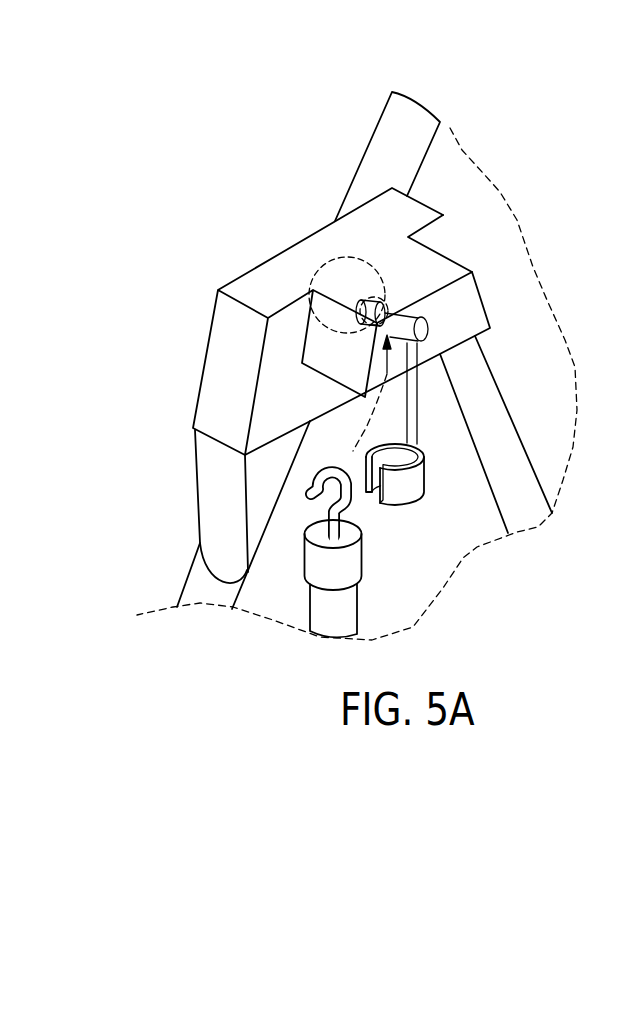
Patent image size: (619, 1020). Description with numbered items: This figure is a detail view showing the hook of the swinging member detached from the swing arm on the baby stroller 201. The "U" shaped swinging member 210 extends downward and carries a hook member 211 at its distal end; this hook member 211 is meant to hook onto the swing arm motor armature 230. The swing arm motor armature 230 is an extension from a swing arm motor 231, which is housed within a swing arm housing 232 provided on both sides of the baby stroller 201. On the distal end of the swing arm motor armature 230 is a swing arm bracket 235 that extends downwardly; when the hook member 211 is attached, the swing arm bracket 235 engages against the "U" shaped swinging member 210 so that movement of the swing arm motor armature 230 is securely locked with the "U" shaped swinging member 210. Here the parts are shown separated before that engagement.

The baby stroller 201 is at (381, 161).
The "U" shaped swinging member 210 is at (356, 610).
The hook member 211 is at (306, 492).
The swing arm motor armature 230 is at (443, 255).
The swing arm motor 231 is at (337, 272).
The swing arm housing 232 is at (430, 216).
The swing arm bracket 235 is at (407, 492).